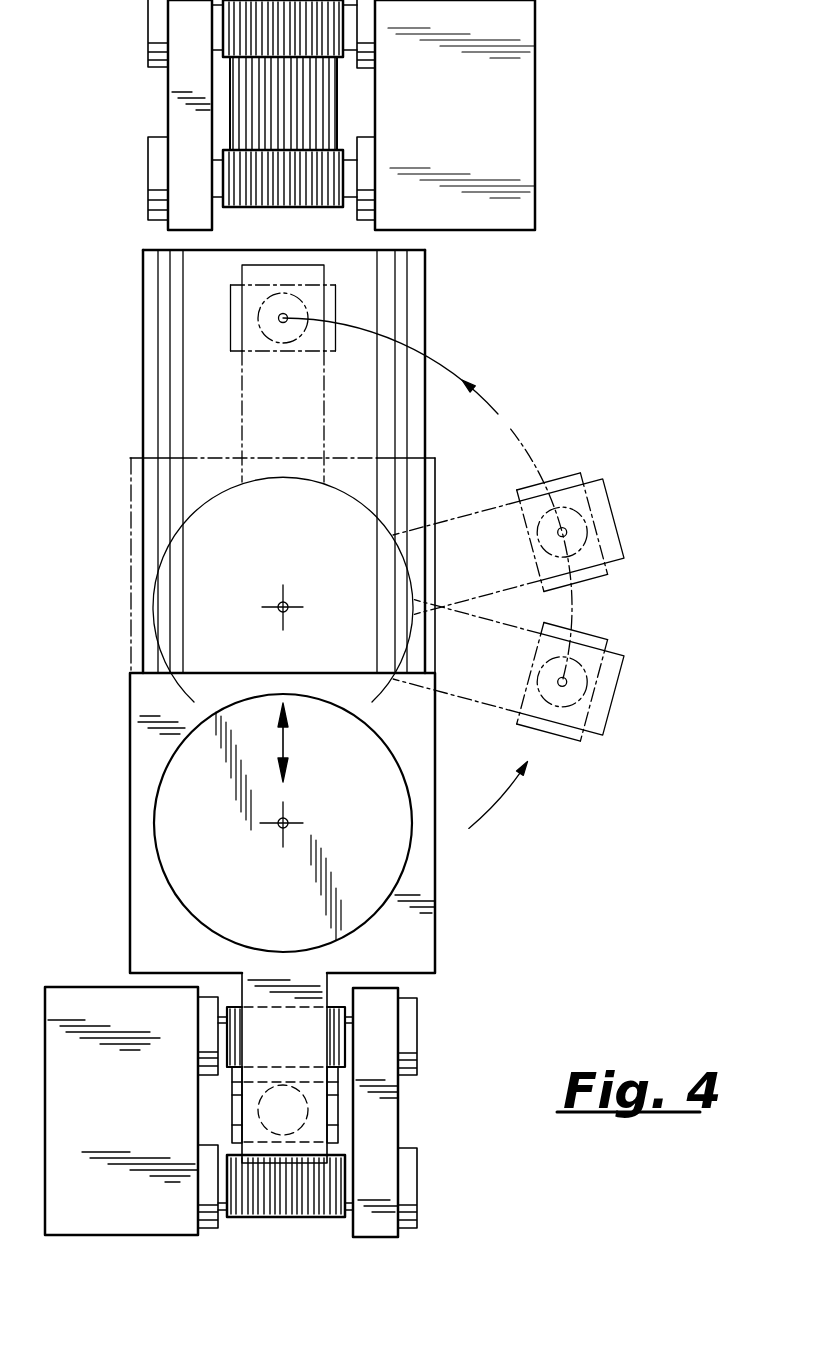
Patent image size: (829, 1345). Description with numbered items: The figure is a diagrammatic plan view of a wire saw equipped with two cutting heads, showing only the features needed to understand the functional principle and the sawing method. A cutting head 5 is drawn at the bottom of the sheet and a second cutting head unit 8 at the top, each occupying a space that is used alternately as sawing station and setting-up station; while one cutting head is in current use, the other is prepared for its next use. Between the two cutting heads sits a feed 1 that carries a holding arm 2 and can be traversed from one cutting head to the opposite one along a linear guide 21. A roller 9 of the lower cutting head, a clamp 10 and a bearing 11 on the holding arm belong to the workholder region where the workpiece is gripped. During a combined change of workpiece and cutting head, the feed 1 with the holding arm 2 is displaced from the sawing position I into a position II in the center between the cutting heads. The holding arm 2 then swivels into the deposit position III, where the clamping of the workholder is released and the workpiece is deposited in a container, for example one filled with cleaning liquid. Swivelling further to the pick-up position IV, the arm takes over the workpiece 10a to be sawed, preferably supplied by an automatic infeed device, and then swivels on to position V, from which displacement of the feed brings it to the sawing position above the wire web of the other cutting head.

The feed 1 is at (418, 940).
The holding arm 2 is at (325, 409).
The cutting head 5 is at (428, 1208).
The upper roller unit 8 is at (136, 19).
The roller 9 is at (342, 1218).
The clamp 10 is at (575, 740).
The workpiece 10a is at (336, 290).
The bearing 11 is at (233, 1073).
The linear guide 21 is at (425, 329).
The sawing position I is at (278, 830).
The center position II is at (278, 603).
The deposit position III is at (566, 685).
The pick-up position IV is at (566, 529).
The transfer position V is at (278, 319).